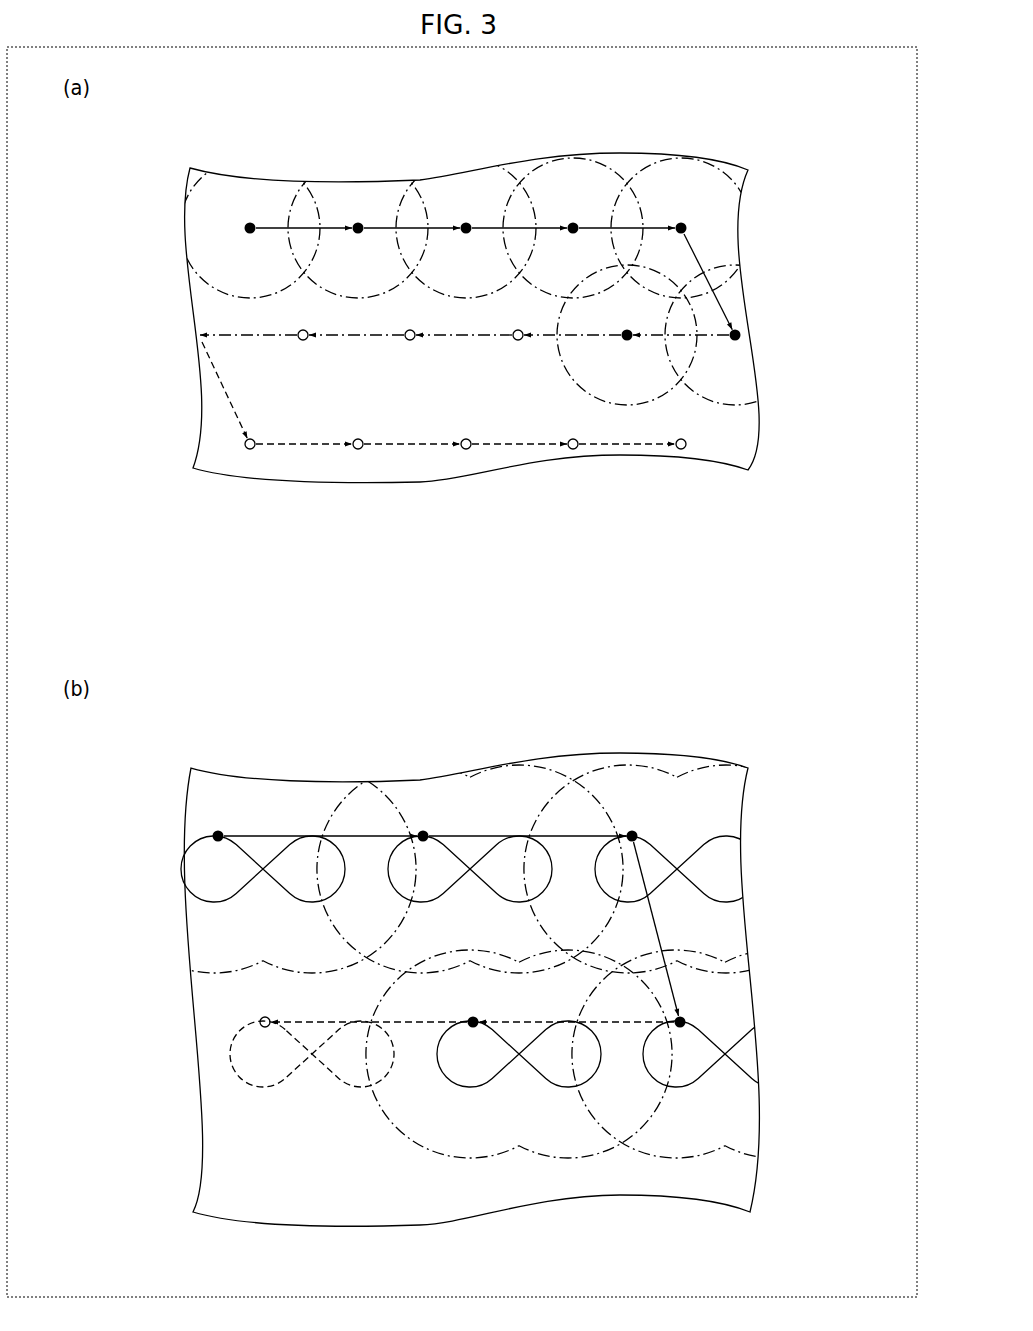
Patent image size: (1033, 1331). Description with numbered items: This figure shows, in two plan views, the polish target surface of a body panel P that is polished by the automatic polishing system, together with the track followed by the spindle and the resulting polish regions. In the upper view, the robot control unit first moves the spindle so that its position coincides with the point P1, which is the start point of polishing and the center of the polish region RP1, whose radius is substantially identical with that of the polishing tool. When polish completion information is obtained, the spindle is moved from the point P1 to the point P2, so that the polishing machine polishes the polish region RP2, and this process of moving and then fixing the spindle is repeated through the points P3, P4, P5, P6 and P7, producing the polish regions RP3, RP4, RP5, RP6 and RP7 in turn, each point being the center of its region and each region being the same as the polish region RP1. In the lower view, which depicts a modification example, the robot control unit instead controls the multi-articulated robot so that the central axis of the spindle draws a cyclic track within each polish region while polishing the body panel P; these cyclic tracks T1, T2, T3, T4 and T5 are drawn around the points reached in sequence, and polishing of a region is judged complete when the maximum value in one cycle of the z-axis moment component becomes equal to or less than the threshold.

The body panel P is at (749, 456).
The point P1 is at (254, 225).
The point P2 is at (362, 225).
The point P3 is at (470, 225).
The point P4 is at (577, 225).
The point P5 is at (685, 225).
The point P6 is at (732, 340).
The point P7 is at (624, 340).
The polish region RP1 is at (267, 275).
The polish region RP2 is at (375, 275).
The polish region RP3 is at (483, 275).
The polish region RP4 is at (591, 275).
The polish region RP5 is at (701, 197).
The polish region RP6 is at (753, 397).
The polish region RP7 is at (643, 397).
The trajectory 1 T1 is at (233, 897).
The trajectory 2 T2 is at (440, 897).
The trajectory 3 T3 is at (635, 900).
The trajectory 4 T4 is at (680, 1087).
The trajectory 5 T5 is at (470, 1087).